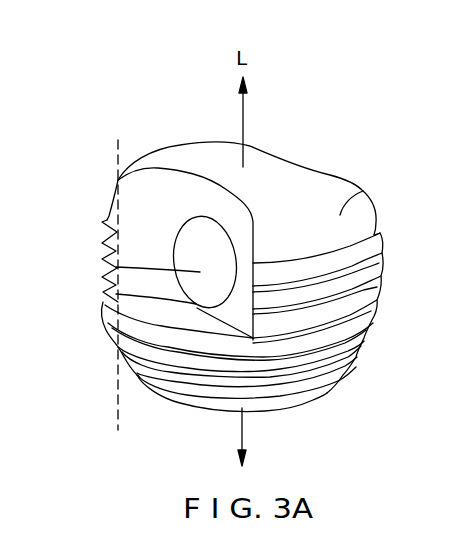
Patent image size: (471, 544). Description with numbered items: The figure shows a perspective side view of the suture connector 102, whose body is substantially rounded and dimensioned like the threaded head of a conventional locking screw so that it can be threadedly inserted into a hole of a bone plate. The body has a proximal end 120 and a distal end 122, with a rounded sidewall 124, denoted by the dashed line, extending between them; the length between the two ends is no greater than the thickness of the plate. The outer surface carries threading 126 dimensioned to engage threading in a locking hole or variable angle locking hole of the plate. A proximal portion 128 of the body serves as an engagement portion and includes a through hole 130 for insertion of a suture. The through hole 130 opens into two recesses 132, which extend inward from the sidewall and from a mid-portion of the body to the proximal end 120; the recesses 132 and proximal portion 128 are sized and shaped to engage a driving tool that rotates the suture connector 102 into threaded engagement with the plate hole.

The suture connector 102 is at (130, 113).
The proximal end 120 is at (263, 173).
The distal end 122 is at (313, 400).
The rounded sidewall 124 is at (118, 166).
The threading 126 is at (362, 318).
The proximal portion 128 is at (363, 191).
The through hole 130 is at (113, 262).
The recesses 132 is at (175, 190).